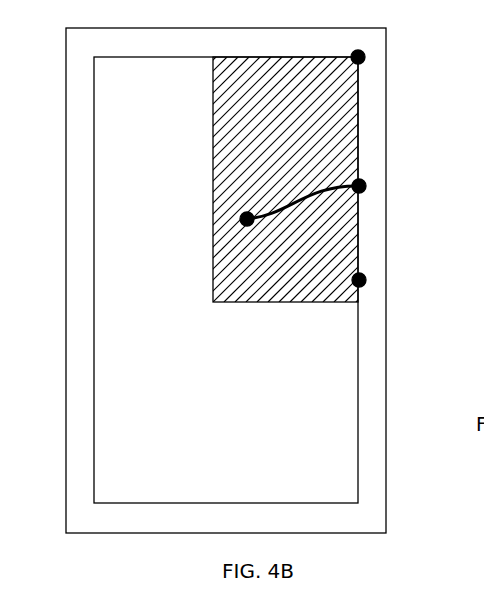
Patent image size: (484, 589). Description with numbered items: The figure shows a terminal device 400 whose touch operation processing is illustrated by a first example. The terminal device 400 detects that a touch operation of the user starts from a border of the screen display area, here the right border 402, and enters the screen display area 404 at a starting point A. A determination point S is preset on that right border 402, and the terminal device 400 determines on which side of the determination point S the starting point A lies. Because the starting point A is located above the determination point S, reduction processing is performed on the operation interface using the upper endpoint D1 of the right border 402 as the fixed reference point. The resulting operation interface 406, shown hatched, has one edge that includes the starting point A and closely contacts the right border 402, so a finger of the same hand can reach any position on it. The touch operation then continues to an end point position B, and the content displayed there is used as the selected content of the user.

The terminal device 400 is at (242, 281).
The right border 402 is at (365, 488).
The screen display area 404 is at (338, 432).
The operation interface 406 is at (338, 136).
The upper endpoint D1 is at (360, 56).
The starting point A is at (359, 186).
The end point position B is at (247, 219).
The determination point S is at (359, 280).